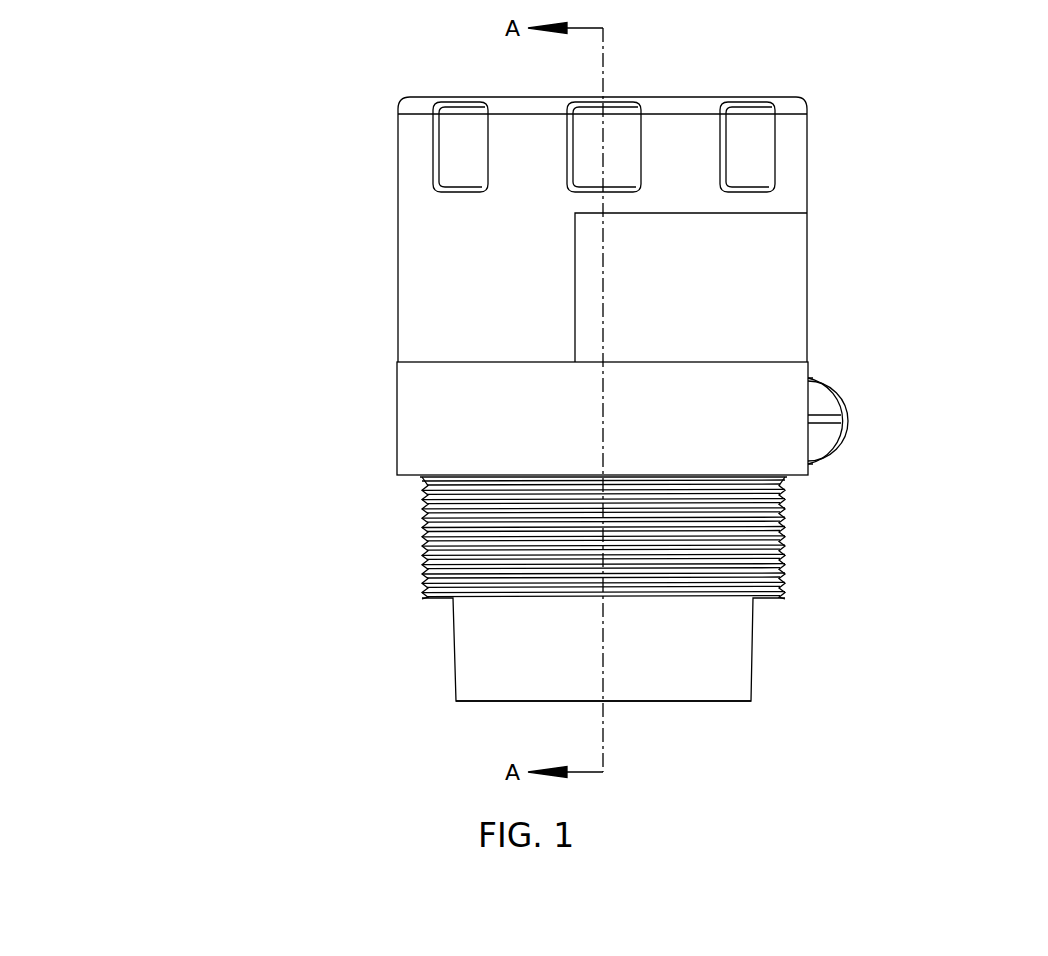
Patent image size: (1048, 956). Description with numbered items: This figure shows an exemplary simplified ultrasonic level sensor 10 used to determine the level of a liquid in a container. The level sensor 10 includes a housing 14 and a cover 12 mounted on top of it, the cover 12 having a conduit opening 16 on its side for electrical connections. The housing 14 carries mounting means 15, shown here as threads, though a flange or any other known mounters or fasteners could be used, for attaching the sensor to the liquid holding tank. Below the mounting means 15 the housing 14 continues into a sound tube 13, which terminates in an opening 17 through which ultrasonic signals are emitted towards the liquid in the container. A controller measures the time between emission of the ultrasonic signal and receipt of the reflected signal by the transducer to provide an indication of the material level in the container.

The level sensor 10 is at (397, 345).
The cover 12 is at (812, 183).
The sound tube 13 is at (752, 646).
The housing 14 is at (388, 421).
The mounting means 15 is at (413, 521).
The conduit opening 16 is at (849, 421).
The opening 17 is at (662, 709).